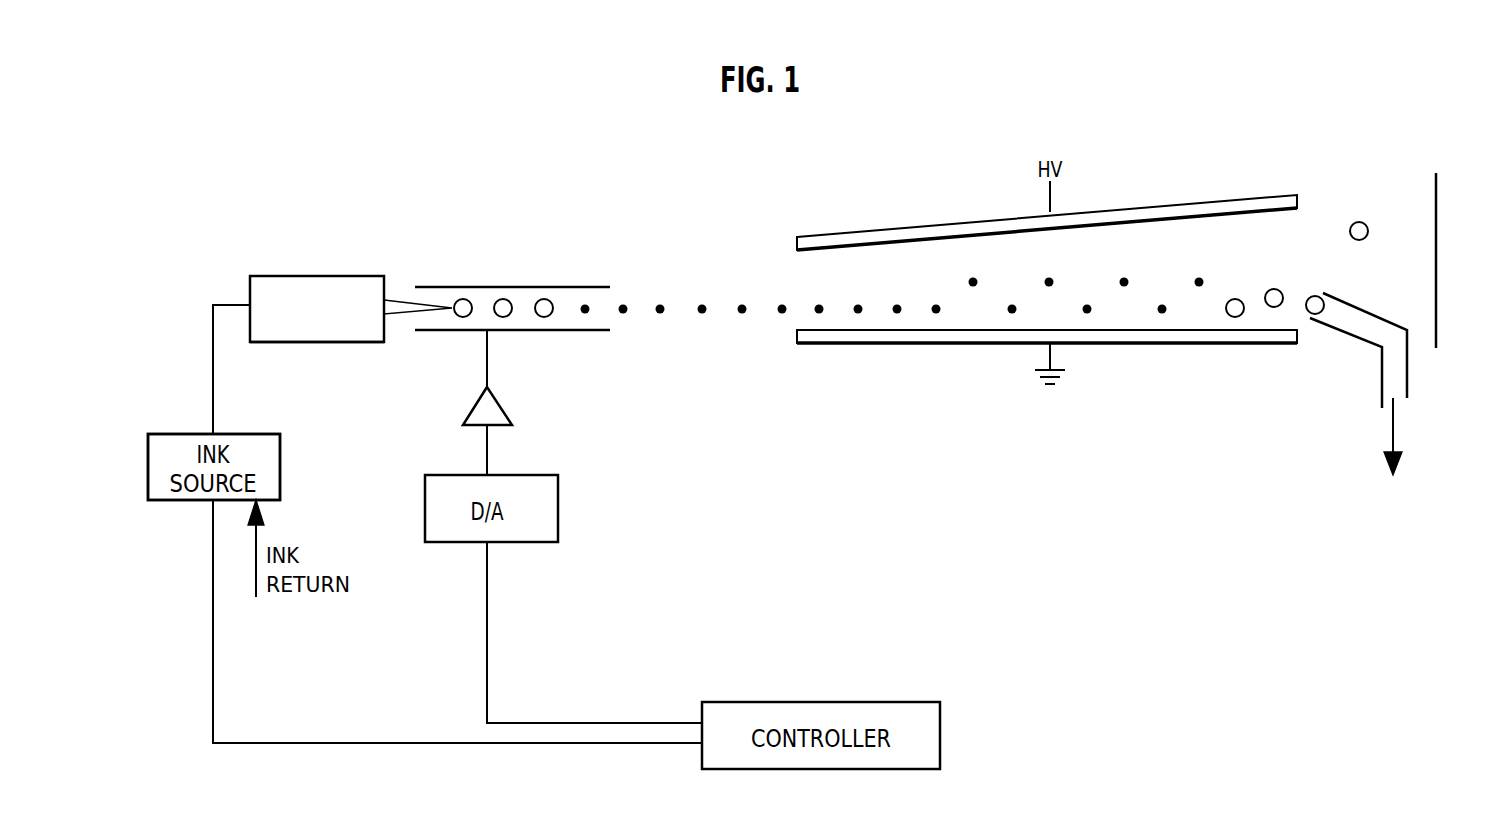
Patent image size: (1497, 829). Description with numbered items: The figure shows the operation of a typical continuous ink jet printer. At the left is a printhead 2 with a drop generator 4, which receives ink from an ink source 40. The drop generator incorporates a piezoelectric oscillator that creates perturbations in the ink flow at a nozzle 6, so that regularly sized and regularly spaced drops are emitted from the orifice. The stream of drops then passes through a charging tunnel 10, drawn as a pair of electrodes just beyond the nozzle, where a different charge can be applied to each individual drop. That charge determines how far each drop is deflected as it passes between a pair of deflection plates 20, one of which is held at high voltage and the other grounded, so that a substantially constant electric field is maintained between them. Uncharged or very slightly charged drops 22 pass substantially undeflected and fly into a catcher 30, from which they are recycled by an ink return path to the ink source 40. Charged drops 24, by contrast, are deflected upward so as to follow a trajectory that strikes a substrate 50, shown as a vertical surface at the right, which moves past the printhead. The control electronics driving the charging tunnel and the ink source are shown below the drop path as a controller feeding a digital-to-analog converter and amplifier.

The printhead 2 is at (338, 270).
The drop generator 4 is at (350, 342).
The nozzle 6 is at (400, 300).
The charging tunnel 10 is at (550, 287).
The deflection plates 20 is at (902, 226).
The uncharged or very slightly charged drops 22 is at (1240, 318).
The charged drops 24 is at (1350, 220).
The catcher 30 is at (1360, 305).
The ink source 40 is at (262, 434).
The substrate 50 is at (1436, 280).